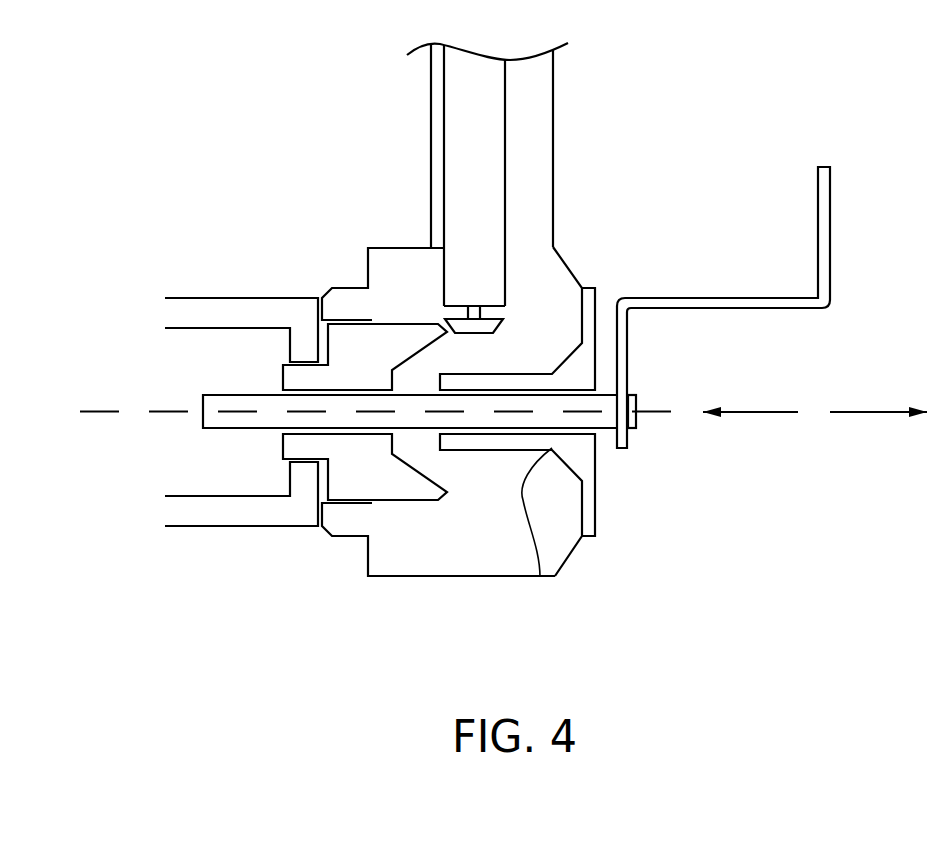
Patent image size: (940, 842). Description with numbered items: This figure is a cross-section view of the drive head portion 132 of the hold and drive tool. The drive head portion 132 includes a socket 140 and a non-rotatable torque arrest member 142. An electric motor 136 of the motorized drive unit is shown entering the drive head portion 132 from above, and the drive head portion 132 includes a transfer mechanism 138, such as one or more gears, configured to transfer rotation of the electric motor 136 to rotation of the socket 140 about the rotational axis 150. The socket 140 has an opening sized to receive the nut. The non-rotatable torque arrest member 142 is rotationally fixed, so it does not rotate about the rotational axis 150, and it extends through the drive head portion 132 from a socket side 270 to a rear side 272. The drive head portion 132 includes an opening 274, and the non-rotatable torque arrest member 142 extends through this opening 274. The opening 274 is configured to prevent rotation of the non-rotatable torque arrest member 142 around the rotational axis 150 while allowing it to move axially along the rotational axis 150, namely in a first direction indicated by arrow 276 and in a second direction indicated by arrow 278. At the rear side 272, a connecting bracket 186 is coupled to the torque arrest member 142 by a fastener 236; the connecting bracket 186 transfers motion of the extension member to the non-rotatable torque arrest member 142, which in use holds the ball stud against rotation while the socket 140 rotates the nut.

The drive head portion 132 is at (377, 611).
The electric motor 136 is at (505, 200).
The transfer mechanism 138 is at (466, 346).
The socket 140 is at (167, 512).
The non-rotatable torque arrest member 142 is at (210, 395).
The rotational axis 150 is at (105, 412).
The connecting bracket 186 is at (830, 243).
The fastener 236 is at (630, 395).
The socket side 270 is at (167, 585).
The rear side 272 is at (618, 560).
The opening 274 is at (540, 577).
The arrow 276 is at (773, 412).
The arrow 278 is at (868, 412).